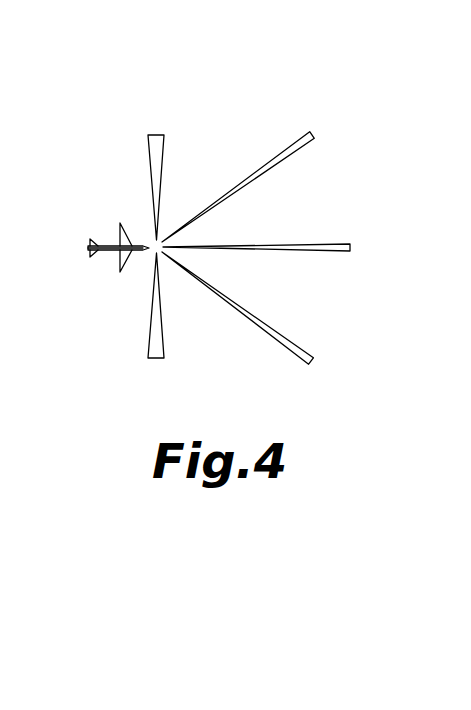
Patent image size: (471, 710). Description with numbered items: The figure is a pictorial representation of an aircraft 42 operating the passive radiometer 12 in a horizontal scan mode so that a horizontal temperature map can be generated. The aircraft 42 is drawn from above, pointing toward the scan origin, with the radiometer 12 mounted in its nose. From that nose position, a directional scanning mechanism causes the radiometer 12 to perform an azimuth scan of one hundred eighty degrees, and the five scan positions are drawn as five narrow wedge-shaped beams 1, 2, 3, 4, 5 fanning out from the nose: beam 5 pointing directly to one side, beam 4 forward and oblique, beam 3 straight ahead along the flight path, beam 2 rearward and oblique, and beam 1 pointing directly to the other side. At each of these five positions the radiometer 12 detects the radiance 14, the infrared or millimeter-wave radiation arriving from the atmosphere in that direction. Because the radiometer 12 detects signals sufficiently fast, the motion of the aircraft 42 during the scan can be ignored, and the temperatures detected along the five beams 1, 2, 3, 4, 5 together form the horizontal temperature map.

The radiation 14 is at (259, 60).
The beam 1 (downward) 1 is at (154, 324).
The beam 2 (rear oblique) 2 is at (249, 318).
The beam 3 (rearward) 3 is at (268, 254).
The beam 4 (forward oblique) 4 is at (250, 178).
The beam 5 (upward) 5 is at (157, 171).
The radiometer 12 is at (145, 254).
The aircraft 42 is at (105, 243).